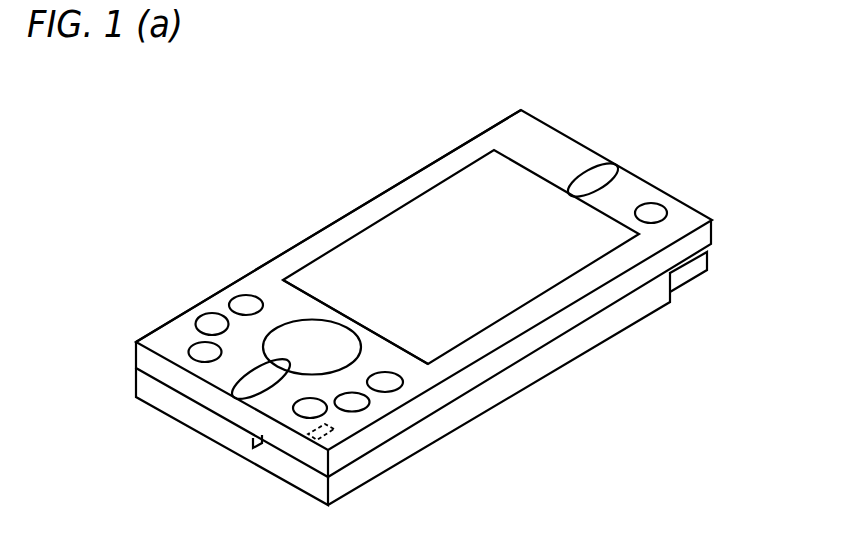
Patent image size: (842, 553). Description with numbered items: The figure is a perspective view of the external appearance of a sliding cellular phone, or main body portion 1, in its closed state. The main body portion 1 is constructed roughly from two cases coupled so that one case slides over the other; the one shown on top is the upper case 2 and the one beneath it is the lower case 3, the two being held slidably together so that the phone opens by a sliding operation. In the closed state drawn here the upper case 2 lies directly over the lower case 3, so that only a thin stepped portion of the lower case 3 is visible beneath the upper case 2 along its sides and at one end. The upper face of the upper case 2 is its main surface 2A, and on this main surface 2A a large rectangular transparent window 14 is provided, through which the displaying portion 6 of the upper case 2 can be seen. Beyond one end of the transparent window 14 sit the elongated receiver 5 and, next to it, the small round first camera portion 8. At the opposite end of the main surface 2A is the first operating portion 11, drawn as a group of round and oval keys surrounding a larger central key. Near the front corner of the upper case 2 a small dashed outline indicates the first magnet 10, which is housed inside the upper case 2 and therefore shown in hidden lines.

The main body portion 1 is at (377, 198).
The upper case 2 is at (469, 148).
The main surface 2A is at (508, 122).
The lower case 3 is at (405, 440).
The transparent window 14 is at (446, 224).
The displaying portion 6 is at (357, 250).
The first operating portion 11 is at (212, 323).
The receiver 5 is at (592, 178).
The first camera portion 8 is at (655, 208).
The first magnet 10 is at (320, 441).